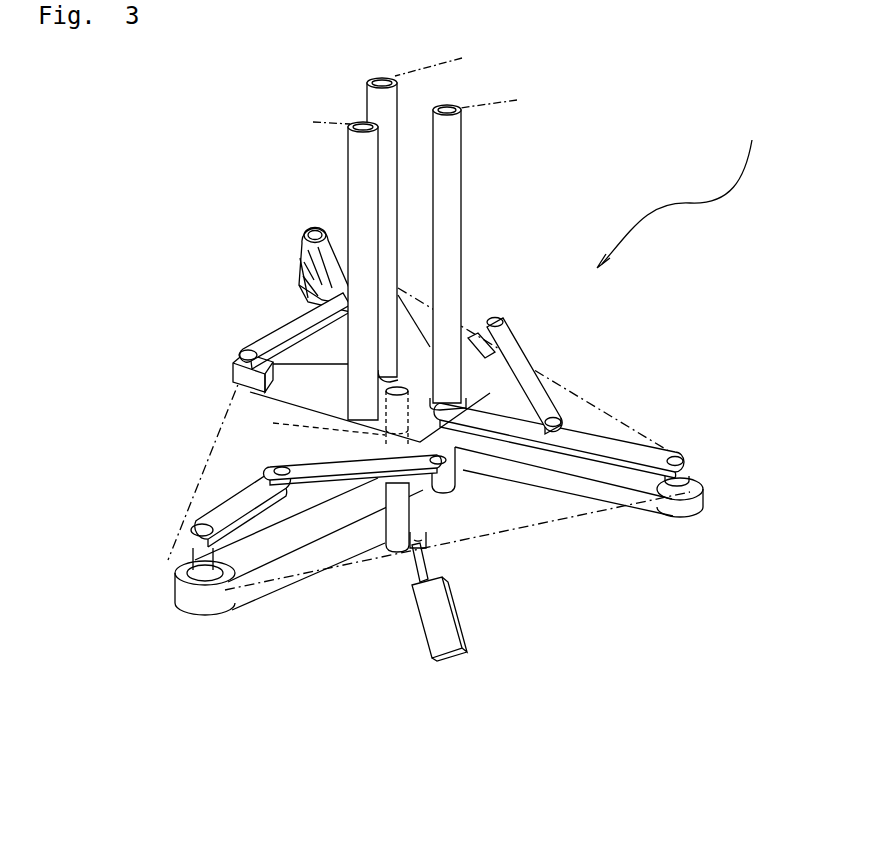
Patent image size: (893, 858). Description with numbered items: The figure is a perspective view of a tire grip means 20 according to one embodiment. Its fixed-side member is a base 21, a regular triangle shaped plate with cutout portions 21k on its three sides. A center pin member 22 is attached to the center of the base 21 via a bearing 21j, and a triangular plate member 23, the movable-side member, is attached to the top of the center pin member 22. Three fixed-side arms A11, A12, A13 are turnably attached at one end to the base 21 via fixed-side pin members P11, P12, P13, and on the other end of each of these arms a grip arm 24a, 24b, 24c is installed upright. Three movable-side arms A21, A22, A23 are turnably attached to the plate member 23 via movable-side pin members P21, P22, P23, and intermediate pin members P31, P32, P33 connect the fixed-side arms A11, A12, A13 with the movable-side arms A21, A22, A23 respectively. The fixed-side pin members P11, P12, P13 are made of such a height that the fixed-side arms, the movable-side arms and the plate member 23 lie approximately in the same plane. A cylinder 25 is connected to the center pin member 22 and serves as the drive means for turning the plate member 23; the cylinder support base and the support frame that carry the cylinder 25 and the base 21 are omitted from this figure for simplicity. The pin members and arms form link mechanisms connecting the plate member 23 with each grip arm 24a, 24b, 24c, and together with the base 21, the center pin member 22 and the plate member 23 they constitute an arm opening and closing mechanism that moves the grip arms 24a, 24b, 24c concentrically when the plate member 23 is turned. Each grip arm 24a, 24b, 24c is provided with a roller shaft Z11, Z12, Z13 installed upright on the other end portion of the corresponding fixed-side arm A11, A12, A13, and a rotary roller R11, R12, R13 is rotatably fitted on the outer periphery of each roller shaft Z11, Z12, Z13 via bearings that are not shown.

The tire grip means 20 is at (768, 137).
The base 21 is at (237, 583).
The bearing 21j is at (311, 425).
The cutout portions 21k is at (218, 403).
The center pin member 22 is at (383, 513).
The plate member 23 is at (327, 380).
The grip arm 24a is at (348, 163).
The grip arm 24b is at (367, 97).
The grip arm 24c is at (450, 163).
The cylinder 25 is at (445, 605).
The fixed-side arm A11 is at (253, 500).
The fixed-side arm A12 is at (300, 259).
The fixed-side arm A13 is at (597, 410).
The movable-side arm A21 is at (332, 470).
The movable-side arm A22 is at (302, 323).
The movable-side arm A23 is at (533, 390).
The fixed-side pin member P11 is at (195, 525).
The fixed-side pin member P12 is at (311, 227).
The fixed-side pin member P13 is at (683, 458).
The movable-side pin member P21 is at (457, 467).
The movable-side pin member P22 is at (238, 350).
The movable-side pin member P23 is at (497, 316).
The intermediate pin member P31 is at (277, 468).
The intermediate pin member P32 is at (300, 277).
The intermediate pin member P33 is at (558, 419).
The rotary roller R11 is at (358, 120).
The rotary roller R12 is at (385, 78).
The rotary roller R13 is at (448, 105).
The roller shaft Z11 is at (313, 124).
The roller shaft Z12 is at (447, 58).
The roller shaft Z13 is at (508, 95).